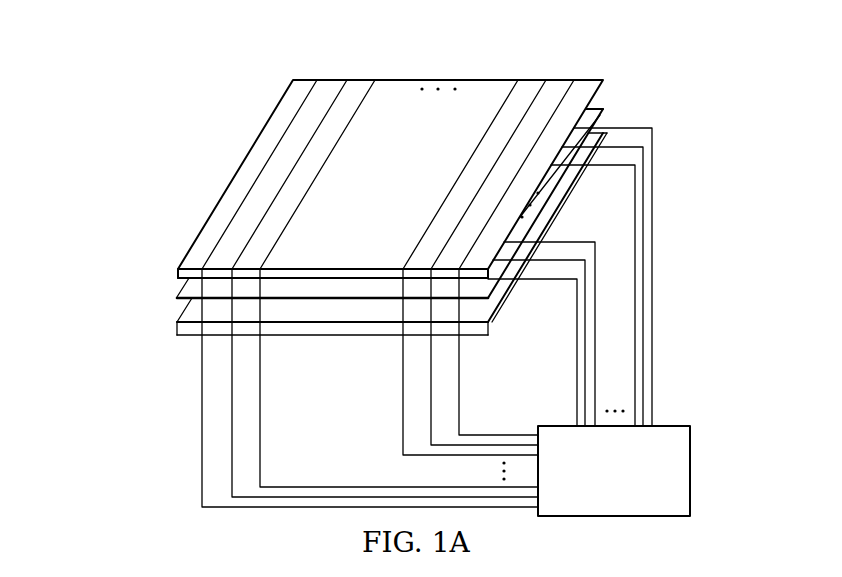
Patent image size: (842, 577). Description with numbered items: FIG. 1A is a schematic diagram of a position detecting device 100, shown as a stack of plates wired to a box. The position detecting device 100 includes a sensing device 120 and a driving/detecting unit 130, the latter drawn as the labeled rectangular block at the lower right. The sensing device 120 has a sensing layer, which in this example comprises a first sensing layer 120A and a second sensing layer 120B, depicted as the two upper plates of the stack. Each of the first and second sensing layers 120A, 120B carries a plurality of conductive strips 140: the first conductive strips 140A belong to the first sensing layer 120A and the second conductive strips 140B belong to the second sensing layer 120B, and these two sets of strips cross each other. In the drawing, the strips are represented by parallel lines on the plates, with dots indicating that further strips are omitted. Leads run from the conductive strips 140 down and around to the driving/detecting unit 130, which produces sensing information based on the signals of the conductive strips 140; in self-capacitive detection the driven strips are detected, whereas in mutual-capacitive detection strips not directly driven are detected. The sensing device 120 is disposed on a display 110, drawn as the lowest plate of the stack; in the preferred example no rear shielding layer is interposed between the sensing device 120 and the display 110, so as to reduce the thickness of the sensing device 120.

The position detecting device 100 is at (394, 210).
The display 110 is at (193, 308).
The sensing device 120 is at (311, 189).
The first sensing layer 120A is at (203, 262).
The second sensing layer 120B is at (190, 290).
The driving/detecting unit 130 is at (614, 471).
The conductive strips 140 is at (630, 178).
The first conductive strips 140A is at (584, 124).
The second conductive strips 140B is at (590, 108).